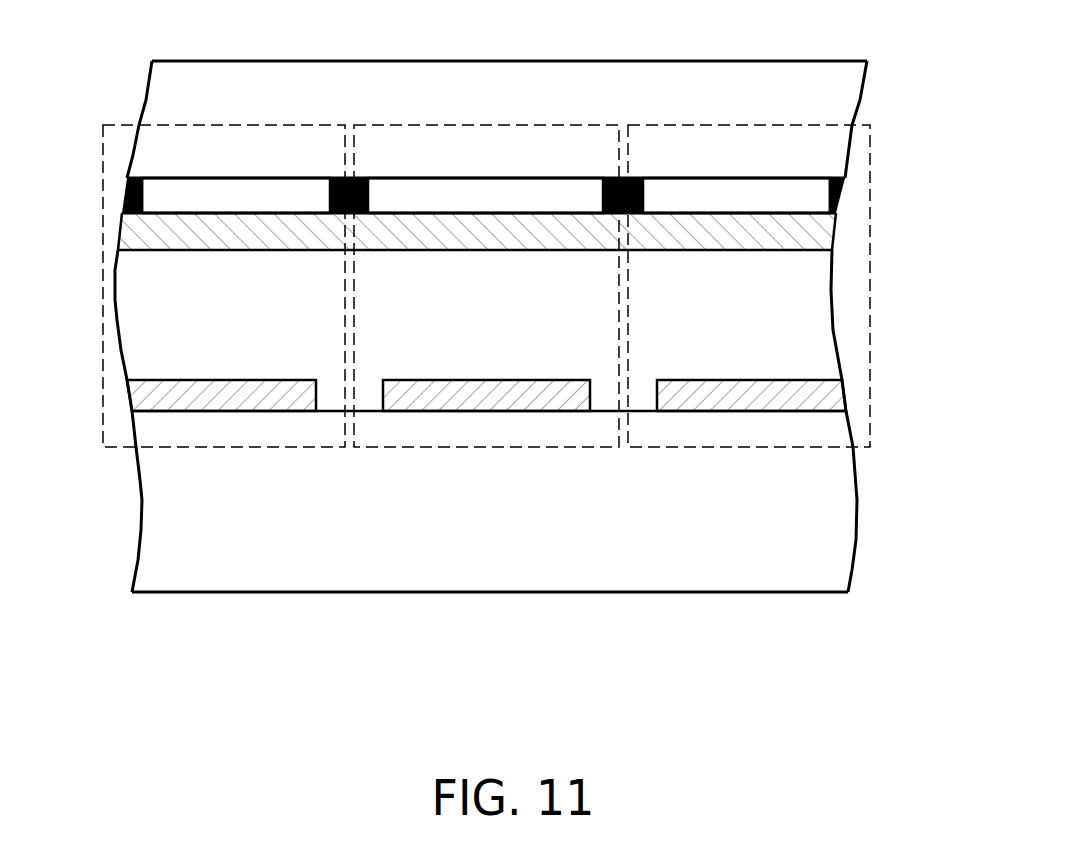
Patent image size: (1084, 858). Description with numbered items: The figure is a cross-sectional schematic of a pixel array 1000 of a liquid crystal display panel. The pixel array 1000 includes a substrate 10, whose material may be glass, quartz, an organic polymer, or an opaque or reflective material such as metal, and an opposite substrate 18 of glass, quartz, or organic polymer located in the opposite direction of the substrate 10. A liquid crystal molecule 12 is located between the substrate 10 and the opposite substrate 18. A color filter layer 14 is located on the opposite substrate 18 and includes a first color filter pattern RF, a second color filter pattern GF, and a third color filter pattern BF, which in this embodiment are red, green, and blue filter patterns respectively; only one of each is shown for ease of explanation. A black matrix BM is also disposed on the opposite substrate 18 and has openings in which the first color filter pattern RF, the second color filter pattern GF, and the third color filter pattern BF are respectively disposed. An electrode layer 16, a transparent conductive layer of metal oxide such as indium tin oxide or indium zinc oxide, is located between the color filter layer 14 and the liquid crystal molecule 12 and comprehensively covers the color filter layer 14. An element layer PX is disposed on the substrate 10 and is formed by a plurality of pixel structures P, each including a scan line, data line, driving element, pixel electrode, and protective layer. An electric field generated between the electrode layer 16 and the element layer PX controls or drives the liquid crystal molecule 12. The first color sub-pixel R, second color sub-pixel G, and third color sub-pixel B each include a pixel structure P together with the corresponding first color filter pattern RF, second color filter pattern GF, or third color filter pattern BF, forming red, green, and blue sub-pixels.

The pixel array 1000 is at (937, 698).
The substrate 10 is at (817, 524).
The liquid crystal molecule 12 is at (805, 320).
The color filter layer 14 is at (524, 110).
The electrode layer 16 is at (820, 235).
The opposite substrate 18 is at (818, 97).
The black matrix BM is at (340, 178).
The first color filter pattern RF is at (236, 196).
The second color filter pattern GF is at (485, 196).
The third color filter pattern BF is at (736, 196).
The element layer PX is at (494, 371).
The pixel structure P is at (178, 397).
The first color sub-pixel R is at (200, 447).
The second color sub-pixel G is at (472, 447).
The third color sub-pixel B is at (728, 447).